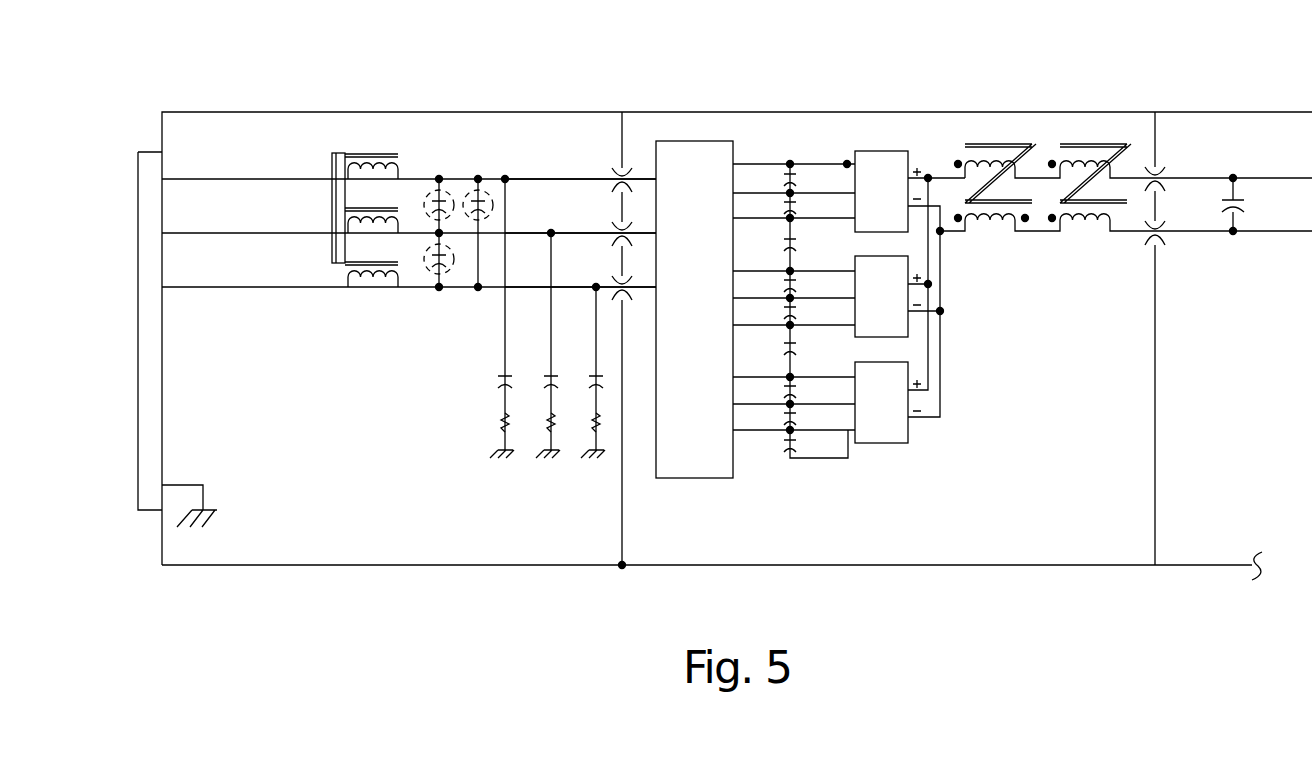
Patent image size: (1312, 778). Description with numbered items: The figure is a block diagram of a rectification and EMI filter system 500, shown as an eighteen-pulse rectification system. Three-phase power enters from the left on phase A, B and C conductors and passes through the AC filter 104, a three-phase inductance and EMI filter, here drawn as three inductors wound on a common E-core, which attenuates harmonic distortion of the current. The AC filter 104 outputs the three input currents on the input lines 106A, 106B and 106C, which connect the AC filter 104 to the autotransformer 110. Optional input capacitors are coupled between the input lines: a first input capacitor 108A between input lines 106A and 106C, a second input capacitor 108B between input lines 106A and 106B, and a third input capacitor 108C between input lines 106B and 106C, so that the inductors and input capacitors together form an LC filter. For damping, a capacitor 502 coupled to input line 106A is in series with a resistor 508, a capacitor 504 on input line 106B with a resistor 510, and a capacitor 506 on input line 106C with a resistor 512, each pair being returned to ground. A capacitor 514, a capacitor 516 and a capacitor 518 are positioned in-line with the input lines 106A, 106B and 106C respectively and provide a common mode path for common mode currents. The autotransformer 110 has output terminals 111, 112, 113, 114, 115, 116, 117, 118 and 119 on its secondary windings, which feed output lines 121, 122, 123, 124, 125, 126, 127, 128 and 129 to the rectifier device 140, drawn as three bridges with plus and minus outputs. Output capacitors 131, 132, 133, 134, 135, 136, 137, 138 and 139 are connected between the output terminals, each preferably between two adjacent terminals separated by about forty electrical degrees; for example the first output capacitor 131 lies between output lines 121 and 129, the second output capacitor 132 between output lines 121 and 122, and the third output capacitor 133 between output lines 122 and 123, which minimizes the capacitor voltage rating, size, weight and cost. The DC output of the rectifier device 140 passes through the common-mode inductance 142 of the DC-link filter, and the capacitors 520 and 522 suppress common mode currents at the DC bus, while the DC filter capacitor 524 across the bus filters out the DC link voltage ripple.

The rectification and EMI filter system 500 is at (120, 104).
The AC filter 104 is at (363, 302).
The first input capacitor 108A is at (485, 195).
The second input capacitor 108B is at (436, 195).
The third input capacitor 108C is at (424, 262).
The input line 106A is at (535, 178).
The input line 106B is at (522, 232).
The input line 106C is at (562, 287).
The capacitor 502 is at (504, 377).
The capacitor 504 is at (548, 376).
The capacitor 506 is at (599, 390).
The resistor 508 is at (500, 428).
The resistor 510 is at (548, 433).
The resistor 512 is at (598, 433).
The capacitor 514 is at (627, 170).
The capacitor 516 is at (629, 225).
The capacitor 518 is at (629, 279).
The autotransformer 110 is at (714, 472).
The output terminal 111 is at (771, 162).
The output terminal 112 is at (771, 190).
The output terminal 113 is at (771, 215).
The output terminal 114 is at (771, 269).
The output terminal 115 is at (771, 295).
The output terminal 116 is at (771, 321).
The output terminal 117 is at (771, 374).
The output terminal 118 is at (771, 400).
The output terminal 119 is at (771, 426).
The output line 121 is at (794, 155).
The output line 122 is at (765, 184).
The output line 123 is at (765, 209).
The output line 124 is at (765, 261).
The output line 125 is at (765, 289).
The output line 126 is at (765, 316).
The output line 127 is at (765, 367).
The output line 128 is at (765, 395).
The output line 129 is at (765, 421).
The first output capacitor 131 is at (816, 445).
The second output capacitor 132 is at (813, 179).
The third output capacitor 133 is at (813, 207).
The output capacitor 134 is at (813, 244).
The output capacitor 135 is at (813, 286).
The output capacitor 136 is at (813, 313).
The output capacitor 137 is at (813, 351).
The output capacitor 138 is at (813, 392).
The output capacitor 139 is at (813, 418).
The rectifier device 140 is at (910, 297).
The common-mode inductance 142 is at (1040, 287).
The capacitor 520 is at (1178, 166).
The capacitor 522 is at (1178, 386).
The DC filter capacitor 524 is at (1242, 200).